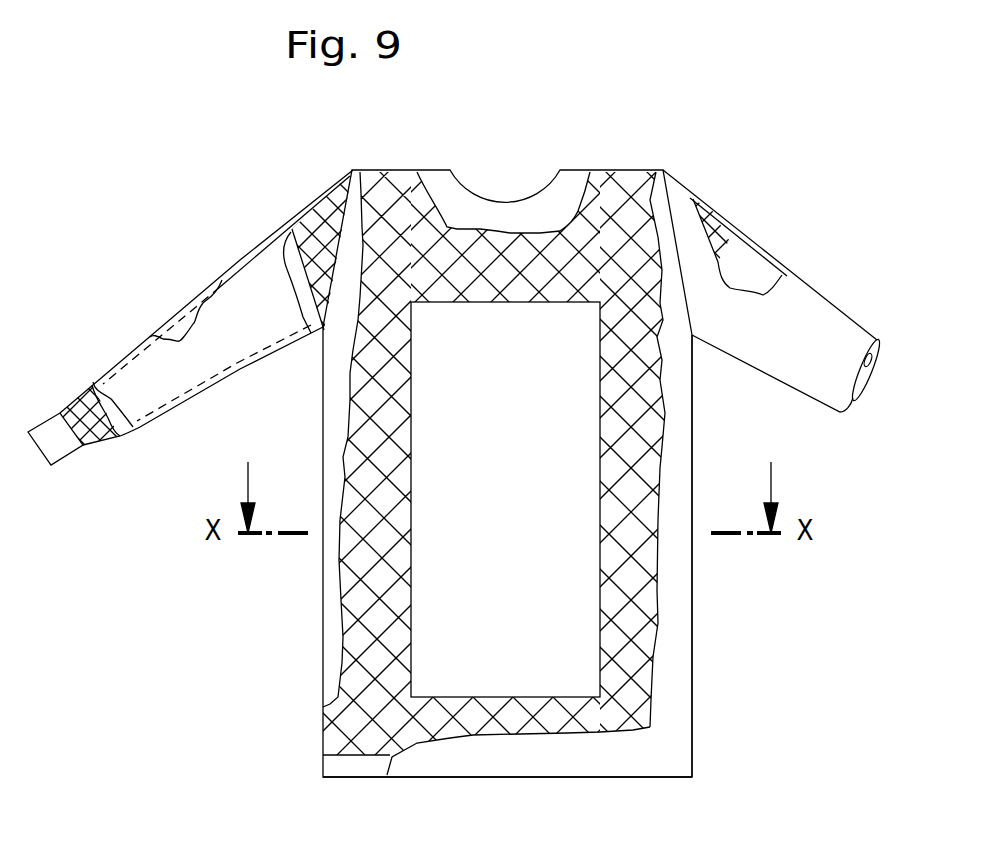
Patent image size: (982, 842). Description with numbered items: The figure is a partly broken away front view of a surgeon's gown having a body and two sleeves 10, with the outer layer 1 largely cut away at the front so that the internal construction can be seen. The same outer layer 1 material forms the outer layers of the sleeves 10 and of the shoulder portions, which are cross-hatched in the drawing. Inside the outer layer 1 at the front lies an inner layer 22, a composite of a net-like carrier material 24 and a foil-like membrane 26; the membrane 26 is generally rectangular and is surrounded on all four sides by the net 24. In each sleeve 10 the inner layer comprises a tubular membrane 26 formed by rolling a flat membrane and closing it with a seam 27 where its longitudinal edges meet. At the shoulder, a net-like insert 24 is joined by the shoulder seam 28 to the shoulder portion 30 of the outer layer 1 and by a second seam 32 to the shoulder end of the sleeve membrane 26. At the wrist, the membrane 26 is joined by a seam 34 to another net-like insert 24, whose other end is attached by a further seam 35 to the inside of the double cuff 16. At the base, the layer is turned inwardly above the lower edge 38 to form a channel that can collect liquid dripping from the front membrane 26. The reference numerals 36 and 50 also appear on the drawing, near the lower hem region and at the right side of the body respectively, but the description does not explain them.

The outer layer 1 is at (566, 185).
The sleeve 10 is at (174, 300).
The double cuff 16 is at (52, 432).
The inner layer 22 is at (860, 372).
The net-like carrier material 24 is at (322, 178).
The membrane 26 is at (517, 465).
The seam 27 is at (877, 340).
The shoulder seam 28 is at (362, 180).
The shoulder portion 30 is at (410, 175).
The second seam 32 is at (290, 300).
The seam 34 is at (121, 404).
The further seam 35 is at (73, 442).
The hem 36 is at (358, 760).
The lower edge 38 is at (617, 780).
The gown front panel 50 is at (697, 633).